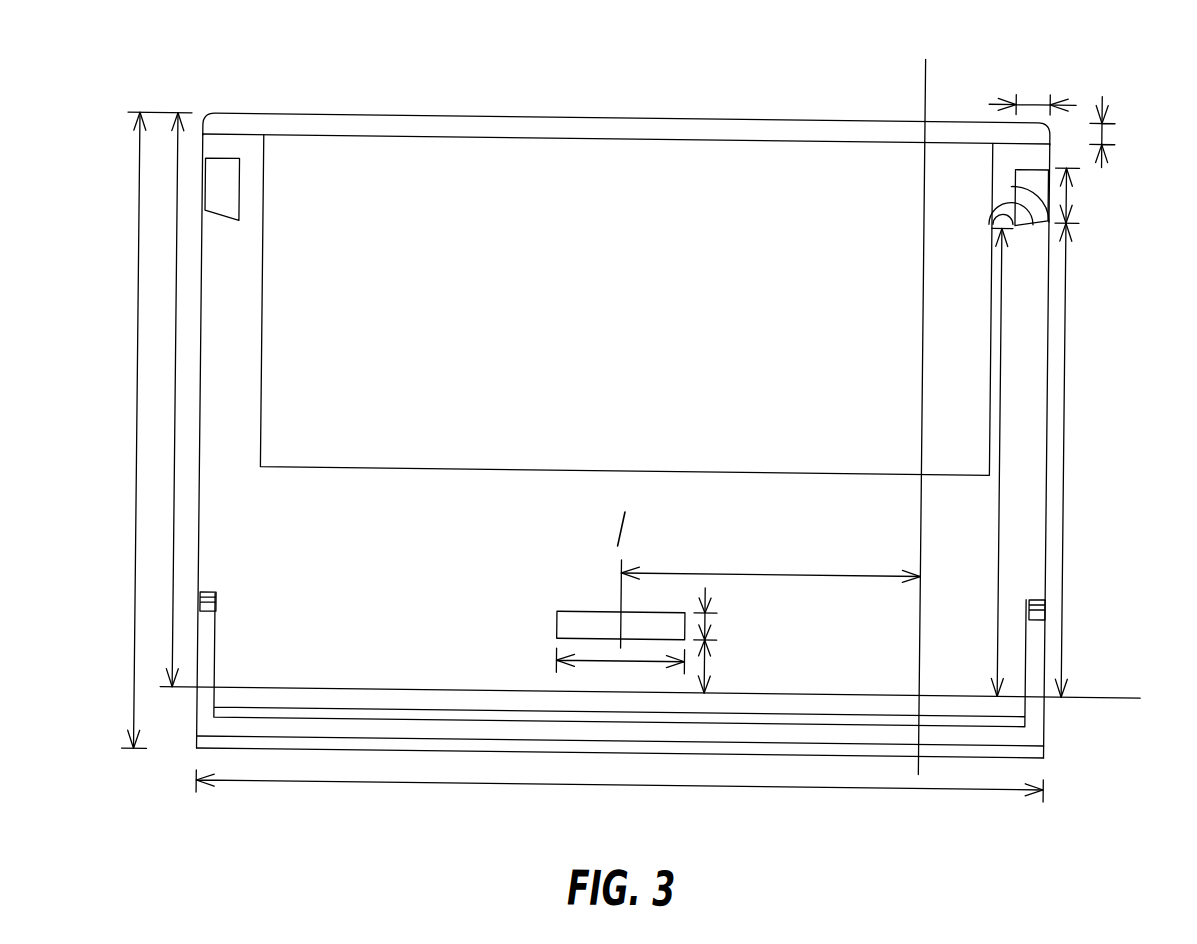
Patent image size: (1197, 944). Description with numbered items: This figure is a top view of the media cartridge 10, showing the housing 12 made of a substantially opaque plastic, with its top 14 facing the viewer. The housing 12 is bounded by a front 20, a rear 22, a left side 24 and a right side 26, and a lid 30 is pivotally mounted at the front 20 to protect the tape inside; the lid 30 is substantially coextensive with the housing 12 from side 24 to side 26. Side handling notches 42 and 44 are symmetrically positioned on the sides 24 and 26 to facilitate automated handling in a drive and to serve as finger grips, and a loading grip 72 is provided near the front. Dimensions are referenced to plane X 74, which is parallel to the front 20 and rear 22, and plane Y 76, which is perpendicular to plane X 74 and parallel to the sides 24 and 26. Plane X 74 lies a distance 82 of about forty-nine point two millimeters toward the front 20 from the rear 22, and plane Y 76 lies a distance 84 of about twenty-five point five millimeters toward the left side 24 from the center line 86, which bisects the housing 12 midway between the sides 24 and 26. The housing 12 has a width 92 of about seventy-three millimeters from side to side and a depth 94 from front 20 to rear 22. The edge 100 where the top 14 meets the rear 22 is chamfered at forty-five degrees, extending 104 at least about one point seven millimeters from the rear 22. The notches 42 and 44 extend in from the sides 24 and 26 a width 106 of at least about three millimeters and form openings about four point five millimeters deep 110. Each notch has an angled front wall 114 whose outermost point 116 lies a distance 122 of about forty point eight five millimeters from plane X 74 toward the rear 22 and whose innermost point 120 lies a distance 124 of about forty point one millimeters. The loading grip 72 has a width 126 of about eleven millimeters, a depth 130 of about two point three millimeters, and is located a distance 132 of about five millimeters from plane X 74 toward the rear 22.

The media cartridge 10 is at (320, 70).
The housing 12 is at (419, 112).
The top 14 is at (326, 556).
The front 20 is at (786, 818).
The rear 22 is at (597, 78).
The left side 24 is at (1110, 362).
The right side 26 is at (115, 363).
The lid 30 is at (1050, 715).
The side handling notch 42 is at (1016, 171).
The side handling notch 44 is at (222, 216).
The loading grip 72 is at (562, 620).
The plane X 74 is at (1113, 687).
The plane Y 76 is at (924, 87).
The distance 82 is at (178, 460).
The distance 84 is at (773, 564).
The center line 86 is at (625, 588).
The width 92 is at (412, 781).
The depth 94 is at (140, 514).
The edge 100 is at (511, 123).
The chamfer extent 104 is at (1105, 124).
The width 106 is at (1029, 93).
The depth 110 is at (1070, 187).
The front wall 114 is at (990, 214).
The outermost point 116 is at (1010, 178).
The innermost point 120 is at (994, 219).
The distance 122 is at (1069, 467).
The distance 124 is at (1002, 549).
The width 126 is at (601, 657).
The depth 130 is at (713, 617).
The distance 132 is at (713, 661).